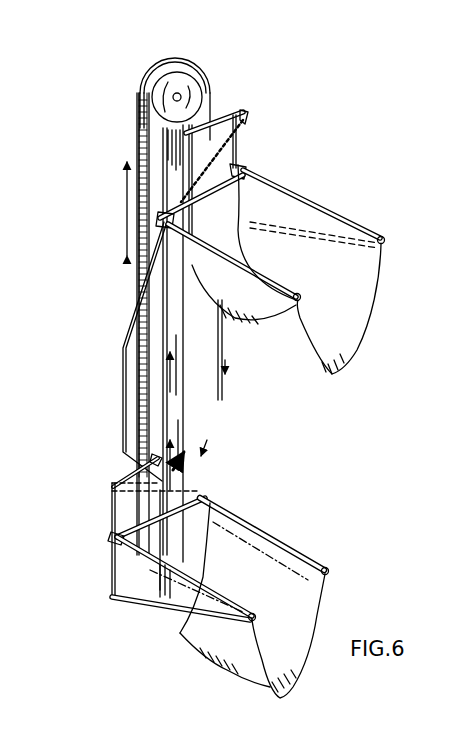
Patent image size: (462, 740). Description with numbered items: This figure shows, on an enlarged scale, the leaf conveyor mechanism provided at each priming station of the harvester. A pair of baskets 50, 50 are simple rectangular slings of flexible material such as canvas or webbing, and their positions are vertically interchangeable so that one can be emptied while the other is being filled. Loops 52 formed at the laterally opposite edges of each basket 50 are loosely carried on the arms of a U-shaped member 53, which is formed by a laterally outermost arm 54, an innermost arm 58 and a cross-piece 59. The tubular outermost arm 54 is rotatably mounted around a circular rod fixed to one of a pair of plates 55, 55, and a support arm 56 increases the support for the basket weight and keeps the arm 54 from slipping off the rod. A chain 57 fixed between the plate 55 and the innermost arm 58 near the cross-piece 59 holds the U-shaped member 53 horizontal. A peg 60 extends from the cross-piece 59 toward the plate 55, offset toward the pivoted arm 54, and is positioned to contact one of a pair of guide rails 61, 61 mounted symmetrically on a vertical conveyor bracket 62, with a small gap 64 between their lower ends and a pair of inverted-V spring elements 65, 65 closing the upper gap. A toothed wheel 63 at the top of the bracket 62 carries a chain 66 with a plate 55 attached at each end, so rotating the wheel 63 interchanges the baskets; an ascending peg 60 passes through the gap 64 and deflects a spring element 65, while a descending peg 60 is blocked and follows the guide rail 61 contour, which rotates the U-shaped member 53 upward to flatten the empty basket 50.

The basket 50 is at (375, 312).
The loop 52 is at (384, 245).
The U-shaped member 53 is at (262, 174).
The laterally outermost arm 54 is at (240, 162).
The plate 55 is at (248, 108).
The support arm 56 is at (328, 229).
The chain 57 is at (241, 110).
The innermost arm 58 is at (300, 293).
The cross-piece 59 is at (243, 170).
The peg 60 is at (182, 200).
The guide rail 61 is at (122, 388).
The vertical conveyor bracket 62 is at (140, 150).
The toothed wheel 63 is at (192, 73).
The gap 64 is at (184, 458).
The spring element 65 is at (182, 269).
The chain 66 is at (153, 73).